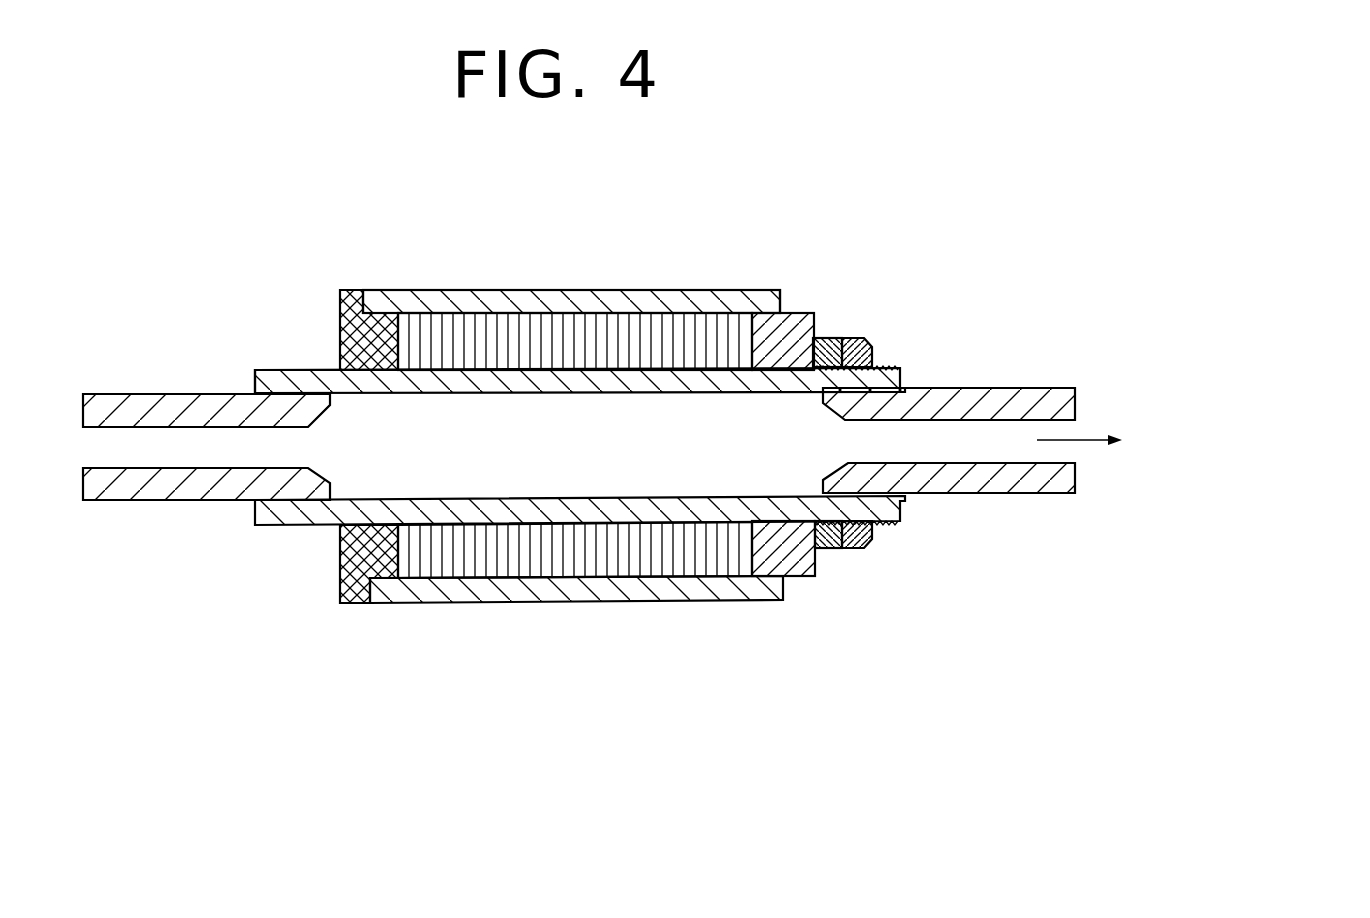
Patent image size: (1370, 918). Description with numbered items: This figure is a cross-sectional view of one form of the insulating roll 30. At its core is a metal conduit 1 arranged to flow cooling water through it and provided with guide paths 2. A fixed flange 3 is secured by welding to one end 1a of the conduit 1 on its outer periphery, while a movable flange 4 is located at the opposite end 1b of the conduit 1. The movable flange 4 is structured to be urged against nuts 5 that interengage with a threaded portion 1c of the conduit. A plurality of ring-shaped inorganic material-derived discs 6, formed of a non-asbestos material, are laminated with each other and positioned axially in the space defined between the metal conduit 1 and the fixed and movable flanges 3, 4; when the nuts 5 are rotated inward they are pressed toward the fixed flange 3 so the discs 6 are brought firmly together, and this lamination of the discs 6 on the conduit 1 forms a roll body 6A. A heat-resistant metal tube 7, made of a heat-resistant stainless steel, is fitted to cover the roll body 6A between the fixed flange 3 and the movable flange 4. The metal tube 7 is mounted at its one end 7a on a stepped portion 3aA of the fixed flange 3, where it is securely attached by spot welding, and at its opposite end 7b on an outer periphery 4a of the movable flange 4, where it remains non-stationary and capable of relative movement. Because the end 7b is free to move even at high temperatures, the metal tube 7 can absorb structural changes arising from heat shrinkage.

The metal conduit 1 is at (556, 344).
The one end of the conduit 1a is at (337, 367).
The opposite end of the conduit 1b is at (828, 340).
The threaded portion of the conduit 1c is at (890, 527).
The guide paths 2 is at (990, 435).
The fixed flange 3 is at (340, 568).
The stepped portion 3aA is at (373, 605).
The movable flange 4 is at (797, 560).
The outer periphery of the movable flange 4a is at (803, 308).
The nuts 5 is at (833, 550).
The inorganic material-derived discs 6 is at (450, 330).
The roll body 6A is at (502, 308).
The metal tube 7 is at (571, 264).
The one end of the metal tube 7a is at (367, 292).
The opposite end of the metal tube 7b is at (752, 300).
The insulating roll 30 is at (652, 615).